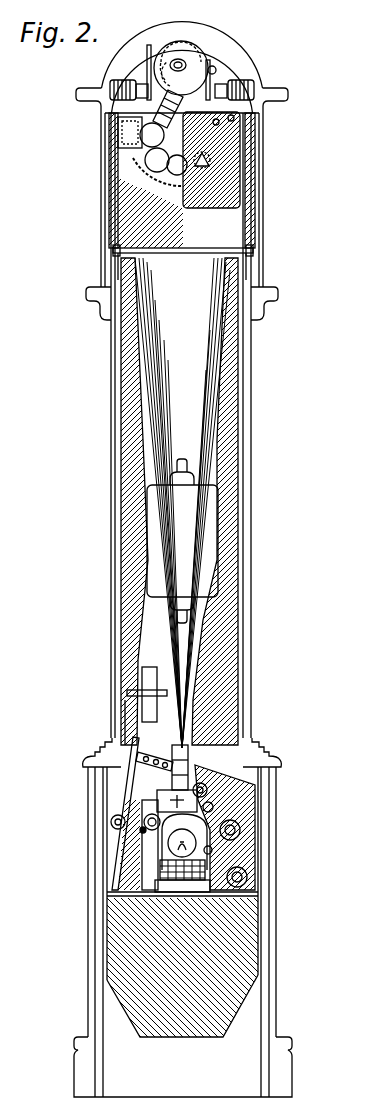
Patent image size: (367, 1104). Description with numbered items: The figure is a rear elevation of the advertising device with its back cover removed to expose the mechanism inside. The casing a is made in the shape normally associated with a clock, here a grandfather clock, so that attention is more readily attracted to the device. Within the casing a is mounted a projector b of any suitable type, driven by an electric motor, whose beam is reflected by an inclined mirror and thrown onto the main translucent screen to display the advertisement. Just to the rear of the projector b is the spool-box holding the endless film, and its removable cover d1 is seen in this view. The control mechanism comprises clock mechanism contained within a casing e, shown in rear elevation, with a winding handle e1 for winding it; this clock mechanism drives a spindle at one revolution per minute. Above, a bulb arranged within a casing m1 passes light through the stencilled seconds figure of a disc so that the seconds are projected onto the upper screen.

The casing a is at (111, 536).
The projector b is at (165, 848).
The removable cover d1 is at (140, 950).
The clock mechanism casing e is at (232, 185).
The winding handle e1 is at (209, 158).
The bulb casing m1 is at (195, 66).